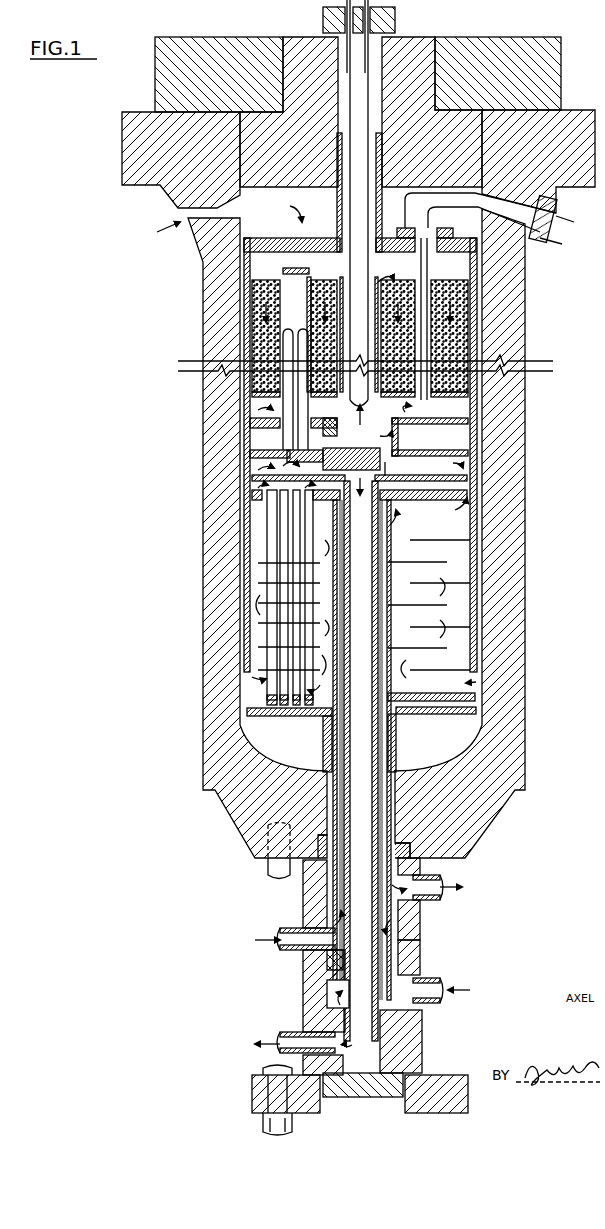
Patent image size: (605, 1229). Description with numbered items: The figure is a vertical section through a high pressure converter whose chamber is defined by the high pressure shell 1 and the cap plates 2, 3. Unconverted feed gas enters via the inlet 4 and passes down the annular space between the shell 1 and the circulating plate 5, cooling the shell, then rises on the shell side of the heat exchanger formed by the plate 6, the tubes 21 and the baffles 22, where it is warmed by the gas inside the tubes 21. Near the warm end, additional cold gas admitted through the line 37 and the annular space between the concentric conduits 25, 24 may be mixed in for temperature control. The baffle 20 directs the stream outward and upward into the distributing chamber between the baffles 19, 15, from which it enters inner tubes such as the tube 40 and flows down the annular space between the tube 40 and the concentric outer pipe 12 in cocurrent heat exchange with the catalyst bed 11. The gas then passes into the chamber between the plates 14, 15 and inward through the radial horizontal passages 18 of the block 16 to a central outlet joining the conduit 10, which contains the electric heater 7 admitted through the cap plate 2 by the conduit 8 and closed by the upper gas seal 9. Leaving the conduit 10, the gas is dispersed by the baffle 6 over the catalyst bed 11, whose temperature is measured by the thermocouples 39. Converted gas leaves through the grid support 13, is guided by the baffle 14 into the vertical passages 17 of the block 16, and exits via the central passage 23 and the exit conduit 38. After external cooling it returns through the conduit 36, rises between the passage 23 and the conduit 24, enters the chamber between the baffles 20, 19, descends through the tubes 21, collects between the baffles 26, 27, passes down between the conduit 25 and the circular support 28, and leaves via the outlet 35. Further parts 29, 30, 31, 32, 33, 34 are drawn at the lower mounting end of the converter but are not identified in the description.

The high pressure shell 1 is at (525, 312).
The cap plate 2 is at (398, 37).
The cap plate 3 is at (561, 69).
The feed gas inlet 4 is at (182, 224).
The circulating plate 5 is at (308, 238).
The plate 6 is at (257, 255).
The electric heater 7 is at (350, 115).
The conduit 8 is at (342, 205).
The upper gas seal 9 is at (368, 134).
The conduit 10 is at (370, 405).
The catalyst bed 11 is at (327, 277).
The concentric outer pipe 12 is at (310, 305).
The grid support 13 is at (447, 408).
The plate 14 is at (250, 413).
The plate 15 is at (250, 466).
The block 16 is at (380, 453).
The vertical passages 17 is at (397, 428).
The radial horizontal passages 18 is at (342, 433).
The baffle 19 is at (400, 458).
The baffle 20 is at (462, 503).
The heat exchanger tubes 21 is at (359, 498).
The baffles 22 is at (258, 620).
The central passage 23 is at (354, 536).
The conduit 24 is at (390, 517).
The conduit 25 is at (390, 579).
The baffle 26 is at (419, 692).
The baffle 27 is at (424, 714).
The circular support 28 is at (322, 751).
The seal 29 is at (310, 838).
The lower flange 30 is at (421, 910).
The support block 31 is at (422, 1025).
The base plate 32 is at (381, 1098).
The foot 33 is at (425, 1114).
The bolt 34 is at (265, 866).
The outlet 35 is at (440, 880).
The conduit 36 is at (446, 984).
The line 37 is at (280, 934).
The exit conduit 38 is at (280, 1036).
The thermocouples 39 is at (434, 328).
The inner tube 40 is at (290, 432).